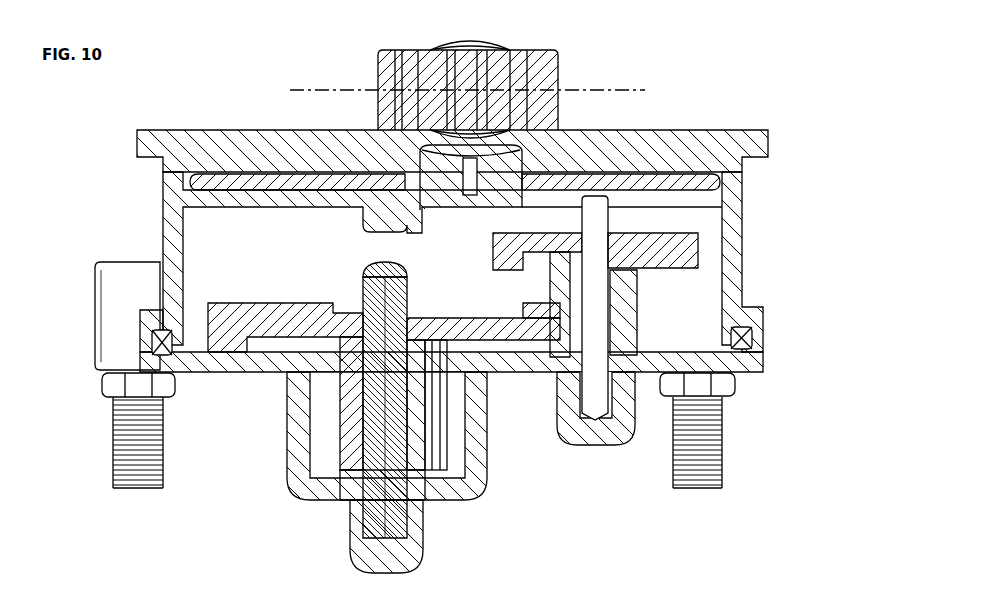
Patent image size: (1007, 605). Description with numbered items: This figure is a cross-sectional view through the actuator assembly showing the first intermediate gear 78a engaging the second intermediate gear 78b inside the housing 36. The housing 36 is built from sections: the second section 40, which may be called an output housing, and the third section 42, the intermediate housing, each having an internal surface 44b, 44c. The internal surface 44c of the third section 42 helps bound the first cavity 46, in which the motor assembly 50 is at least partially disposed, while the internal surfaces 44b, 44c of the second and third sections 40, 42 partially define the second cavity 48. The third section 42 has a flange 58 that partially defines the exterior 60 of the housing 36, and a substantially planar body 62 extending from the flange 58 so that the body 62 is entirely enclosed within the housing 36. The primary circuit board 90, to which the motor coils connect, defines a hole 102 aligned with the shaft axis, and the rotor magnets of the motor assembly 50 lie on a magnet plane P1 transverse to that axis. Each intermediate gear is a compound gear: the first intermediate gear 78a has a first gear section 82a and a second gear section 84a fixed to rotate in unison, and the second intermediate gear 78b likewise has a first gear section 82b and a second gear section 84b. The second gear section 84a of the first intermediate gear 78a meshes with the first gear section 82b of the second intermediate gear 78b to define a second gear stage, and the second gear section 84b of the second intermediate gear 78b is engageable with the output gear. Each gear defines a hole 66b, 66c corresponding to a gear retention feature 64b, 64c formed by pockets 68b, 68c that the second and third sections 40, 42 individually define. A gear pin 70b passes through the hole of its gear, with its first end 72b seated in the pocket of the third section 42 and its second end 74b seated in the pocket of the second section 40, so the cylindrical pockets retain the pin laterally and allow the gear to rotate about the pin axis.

The housing 36 is at (755, 137).
The second section 40 is at (220, 375).
The third section 42 is at (145, 145).
The internal surface of the second section 44b is at (290, 487).
The internal surface of the third section 44c is at (182, 157).
The first cavity 46 is at (666, 142).
The second cavity 48 is at (697, 332).
The motor assembly 50 is at (563, 38).
The flange 58 is at (167, 210).
The exterior 60 is at (743, 215).
The body 62 is at (217, 198).
The gear retention feature 64b is at (387, 226).
The gear retention feature 64c is at (610, 193).
The hole 66b is at (397, 388).
The hole 66c is at (603, 290).
The pocket 68b is at (365, 263).
The pocket 68c is at (603, 197).
The gear pin 70b is at (373, 333).
The first end 72b is at (400, 280).
The second end 74b is at (340, 573).
The first intermediate gear 78a is at (630, 313).
The second intermediate gear 78b is at (287, 407).
The first gear section of the first intermediate gear 82a is at (690, 248).
The first gear section of the second intermediate gear 82b is at (233, 313).
The second gear section of the first intermediate gear 84a is at (720, 400).
The second gear section of the second intermediate gear 84b is at (417, 450).
The primary circuit board 90 is at (682, 183).
The hole 102 is at (522, 173).
The magnet plane P1 is at (597, 89).